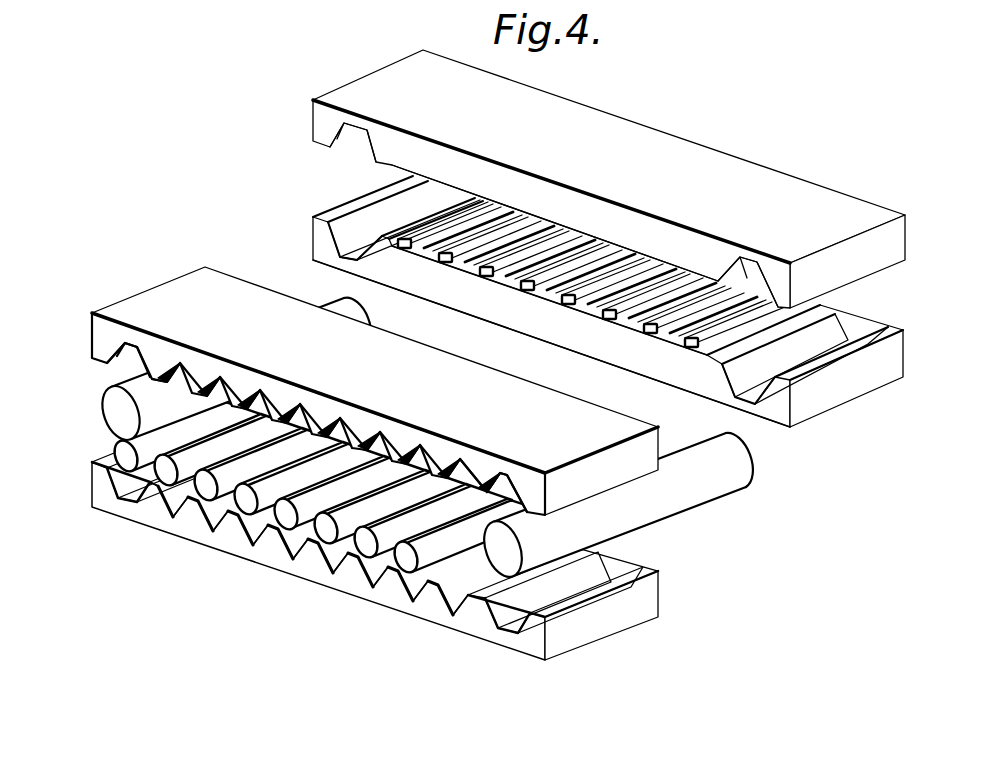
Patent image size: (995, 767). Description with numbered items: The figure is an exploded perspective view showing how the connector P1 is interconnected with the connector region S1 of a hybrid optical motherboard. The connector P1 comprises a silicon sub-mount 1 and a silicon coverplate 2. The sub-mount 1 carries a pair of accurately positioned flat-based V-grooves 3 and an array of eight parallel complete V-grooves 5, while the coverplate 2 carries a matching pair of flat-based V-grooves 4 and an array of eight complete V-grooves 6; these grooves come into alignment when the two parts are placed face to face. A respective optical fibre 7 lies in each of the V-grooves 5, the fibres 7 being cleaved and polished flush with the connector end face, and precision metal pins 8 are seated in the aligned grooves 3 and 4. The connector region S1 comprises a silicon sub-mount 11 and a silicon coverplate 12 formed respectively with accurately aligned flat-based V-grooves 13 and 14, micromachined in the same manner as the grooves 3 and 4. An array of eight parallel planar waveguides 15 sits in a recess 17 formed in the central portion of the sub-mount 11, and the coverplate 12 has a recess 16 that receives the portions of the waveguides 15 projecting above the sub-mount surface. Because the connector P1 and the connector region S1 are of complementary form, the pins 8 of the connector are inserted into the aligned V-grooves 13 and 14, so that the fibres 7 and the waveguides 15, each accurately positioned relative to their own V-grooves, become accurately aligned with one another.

The silicon sub-mount 1 is at (393, 598).
The silicon coverplate 2 is at (230, 298).
The V-grooves 3 is at (116, 493).
The V-grooves 4 is at (117, 337).
The V-grooves 5 is at (165, 510).
The V-grooves 6 is at (177, 365).
The optical fibre 7 is at (213, 528).
The precision metal pins 8 is at (113, 424).
The silicon sub-mount 11 is at (772, 413).
The silicon coverplate 12 is at (600, 121).
The V-grooves 13 is at (340, 239).
The V-grooves 14 is at (341, 135).
The planar waveguides 15 is at (692, 270).
The recess 16 is at (398, 164).
The recess 17 is at (673, 350).
The connector region S1 is at (690, 133).
The connector P1 is at (660, 637).